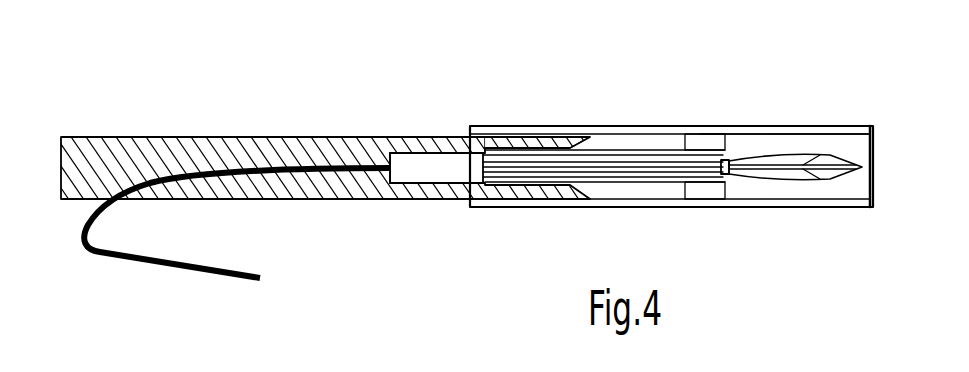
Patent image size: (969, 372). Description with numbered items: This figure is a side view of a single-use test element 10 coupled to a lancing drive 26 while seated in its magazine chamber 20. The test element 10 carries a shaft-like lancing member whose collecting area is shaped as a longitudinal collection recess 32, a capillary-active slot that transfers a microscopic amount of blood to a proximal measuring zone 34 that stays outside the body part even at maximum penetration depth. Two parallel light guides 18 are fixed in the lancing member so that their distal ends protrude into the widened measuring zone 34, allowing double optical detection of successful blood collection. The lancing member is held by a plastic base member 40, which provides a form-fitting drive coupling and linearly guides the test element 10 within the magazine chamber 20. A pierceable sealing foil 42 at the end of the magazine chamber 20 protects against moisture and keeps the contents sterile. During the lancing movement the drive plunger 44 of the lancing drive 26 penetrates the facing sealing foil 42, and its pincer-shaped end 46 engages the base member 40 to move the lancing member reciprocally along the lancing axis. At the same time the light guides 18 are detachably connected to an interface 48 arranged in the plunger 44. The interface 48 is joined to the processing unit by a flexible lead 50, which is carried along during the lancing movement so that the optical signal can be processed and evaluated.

The test element 10 is at (715, 182).
The light guide 18 is at (628, 170).
The magazine chamber 20 is at (792, 137).
The lancing drive 26 is at (258, 124).
The collection recess 32 is at (797, 170).
The measuring zone 34 is at (726, 158).
The base member 40 is at (627, 143).
The sealing foil 42 is at (872, 196).
The drive plunger 44 is at (331, 147).
The pincer-shaped end 46 is at (518, 143).
The interface 48 is at (428, 178).
The flexible lead 50 is at (197, 273).